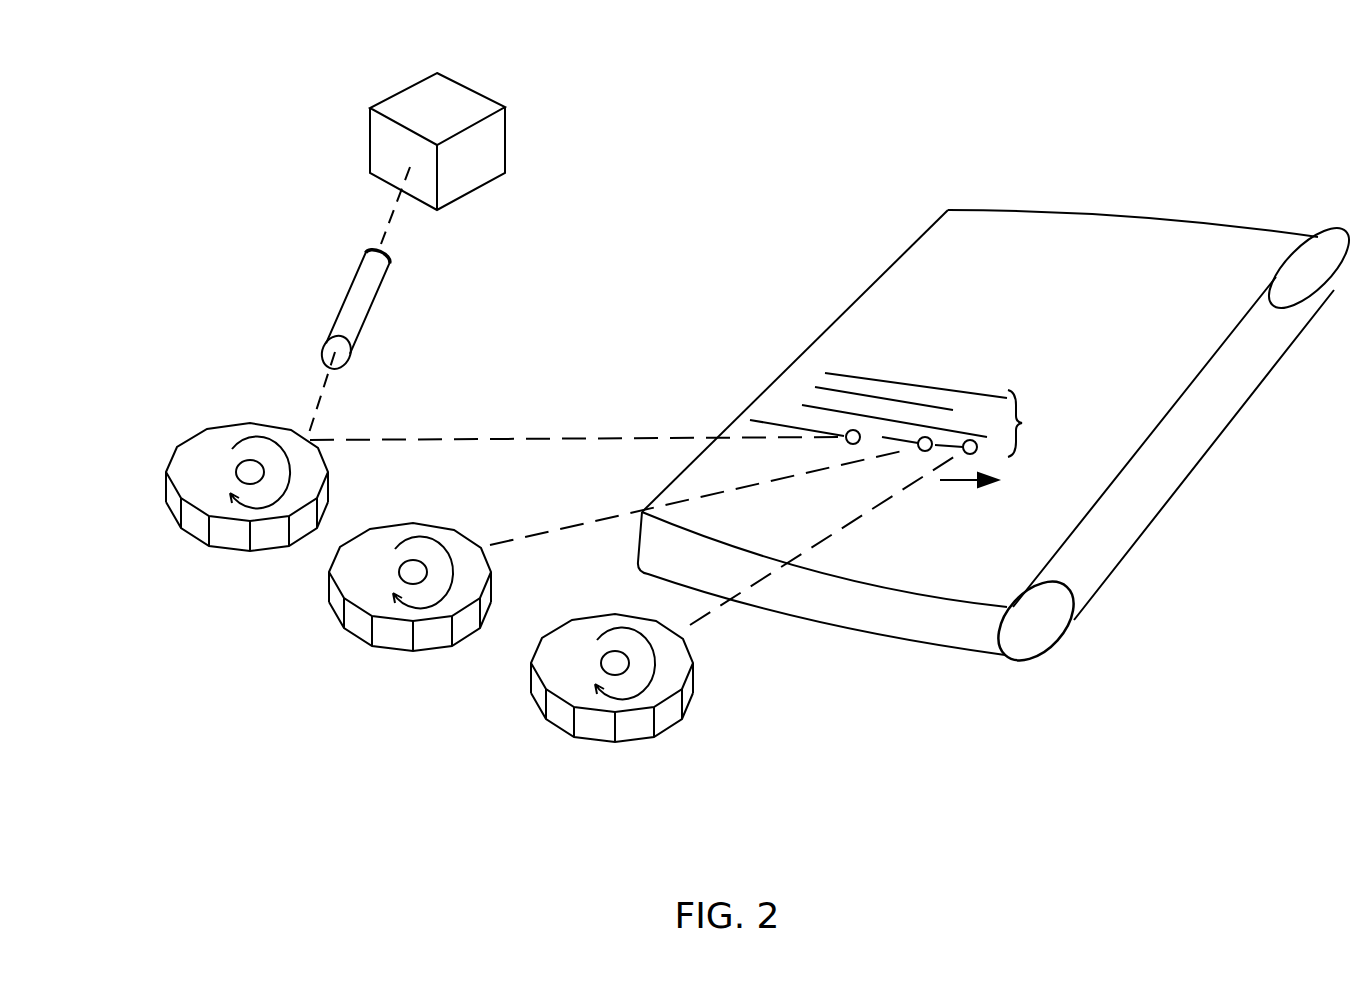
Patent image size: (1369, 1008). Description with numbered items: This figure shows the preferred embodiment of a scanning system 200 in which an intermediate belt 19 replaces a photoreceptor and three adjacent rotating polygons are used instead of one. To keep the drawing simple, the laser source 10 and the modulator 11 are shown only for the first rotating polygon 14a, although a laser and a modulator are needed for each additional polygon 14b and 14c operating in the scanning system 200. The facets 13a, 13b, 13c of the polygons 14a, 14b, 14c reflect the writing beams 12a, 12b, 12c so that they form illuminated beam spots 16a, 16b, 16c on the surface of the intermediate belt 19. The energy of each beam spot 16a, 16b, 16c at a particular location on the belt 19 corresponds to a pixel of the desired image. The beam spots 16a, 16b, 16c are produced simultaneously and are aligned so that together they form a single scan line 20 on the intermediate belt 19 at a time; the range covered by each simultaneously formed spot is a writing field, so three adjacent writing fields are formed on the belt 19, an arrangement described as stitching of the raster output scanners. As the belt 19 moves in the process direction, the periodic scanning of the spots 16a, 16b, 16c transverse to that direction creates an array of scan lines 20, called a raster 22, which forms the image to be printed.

The scanning system 200 is at (246, 143).
The laser source 10 is at (405, 91).
The modulator 11 is at (349, 303).
The writing beam 12a is at (495, 437).
The writing beam 12b is at (546, 530).
The writing beam 12c is at (702, 616).
The facet 13a is at (229, 523).
The facet 13b is at (393, 624).
The facet 13c is at (612, 725).
The rotating polygon 14a is at (229, 485).
The rotating polygon 14b is at (378, 600).
The rotating polygon 14c is at (602, 688).
The beam spot 16a is at (846, 442).
The beam spot 16b is at (922, 451).
The beam spot 16c is at (967, 455).
The intermediate belt 19 is at (1055, 262).
The scan line 20 is at (918, 390).
The raster 22 is at (1032, 423).